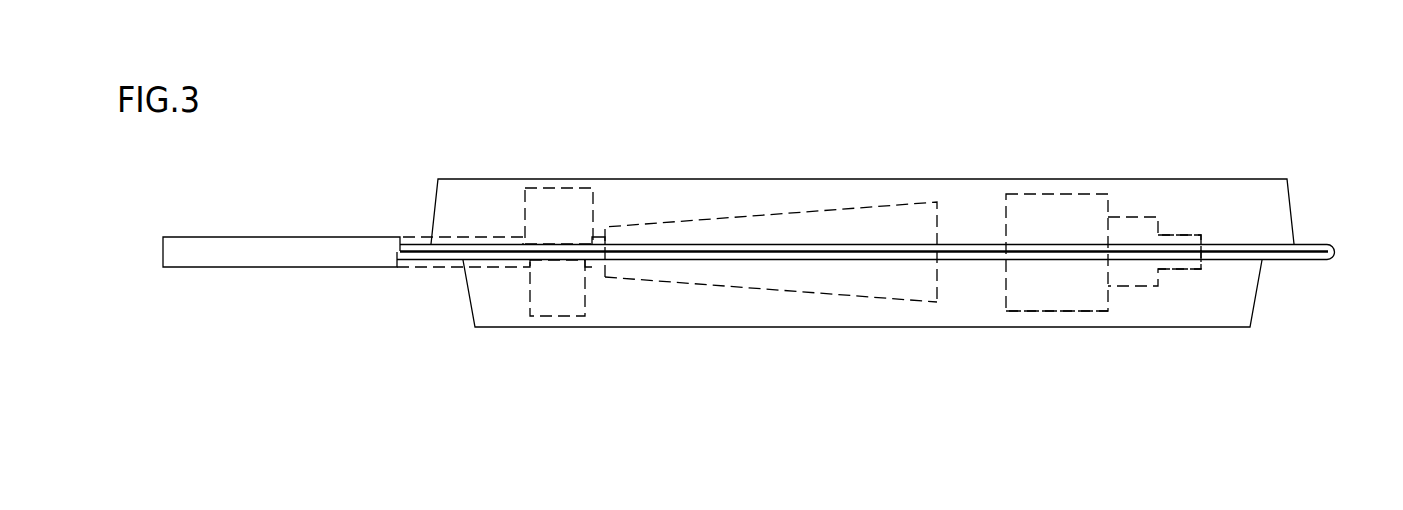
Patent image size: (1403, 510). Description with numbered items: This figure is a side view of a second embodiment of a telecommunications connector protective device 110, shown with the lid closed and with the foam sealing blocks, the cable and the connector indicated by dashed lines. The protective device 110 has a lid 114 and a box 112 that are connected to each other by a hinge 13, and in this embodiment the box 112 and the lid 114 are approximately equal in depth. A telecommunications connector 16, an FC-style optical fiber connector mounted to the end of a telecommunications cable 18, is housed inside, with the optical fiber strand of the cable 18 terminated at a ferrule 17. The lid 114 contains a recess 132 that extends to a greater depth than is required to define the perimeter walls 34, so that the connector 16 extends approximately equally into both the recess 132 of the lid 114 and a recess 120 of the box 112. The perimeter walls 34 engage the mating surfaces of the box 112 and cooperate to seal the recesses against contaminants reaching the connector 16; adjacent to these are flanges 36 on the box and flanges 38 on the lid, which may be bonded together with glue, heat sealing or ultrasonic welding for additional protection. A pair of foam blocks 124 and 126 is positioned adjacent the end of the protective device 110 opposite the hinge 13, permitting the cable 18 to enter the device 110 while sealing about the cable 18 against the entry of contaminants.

The hinge 13 is at (1318, 260).
The telecommunications connector 16 is at (1038, 215).
The ferrule 17 is at (1173, 237).
The telecommunications cable 18 is at (192, 253).
The perimeter walls 34 is at (1283, 230).
The flanges 36 is at (427, 257).
The flanges 38 is at (413, 245).
The protective device 110 is at (732, 328).
The box 112 is at (847, 313).
The lid 114 is at (793, 197).
The recess 120 is at (1047, 312).
The foam block 124 is at (558, 305).
The foam block 126 is at (562, 213).
The recess 132 is at (1183, 208).